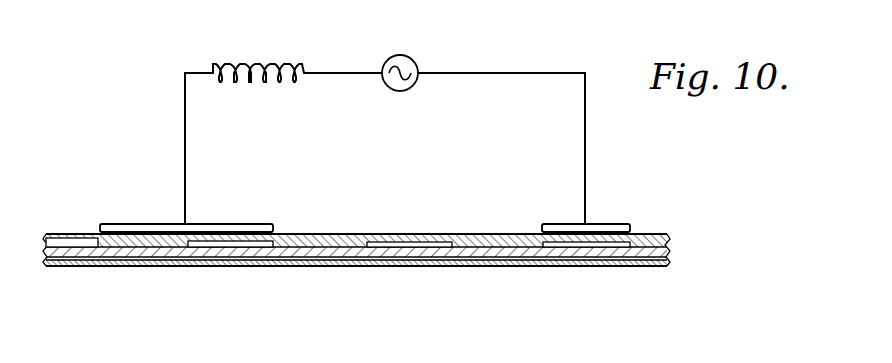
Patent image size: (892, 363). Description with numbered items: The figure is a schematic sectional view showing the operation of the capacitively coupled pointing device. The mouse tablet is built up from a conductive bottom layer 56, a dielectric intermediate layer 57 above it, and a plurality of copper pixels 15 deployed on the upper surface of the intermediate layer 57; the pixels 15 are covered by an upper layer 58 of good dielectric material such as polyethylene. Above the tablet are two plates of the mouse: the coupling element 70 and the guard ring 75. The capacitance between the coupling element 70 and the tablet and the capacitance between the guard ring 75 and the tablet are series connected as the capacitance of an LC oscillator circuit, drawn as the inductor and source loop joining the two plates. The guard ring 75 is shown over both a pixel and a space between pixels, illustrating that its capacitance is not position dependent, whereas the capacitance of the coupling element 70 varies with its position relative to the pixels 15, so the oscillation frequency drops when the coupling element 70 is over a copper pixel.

The pixels 15 is at (233, 245).
The conductive bottom layer 56 is at (633, 257).
The dielectric intermediate layer 57 is at (668, 254).
The upper layer 58 is at (668, 240).
The coupling element 70 is at (613, 222).
The guard ring 75 is at (239, 223).